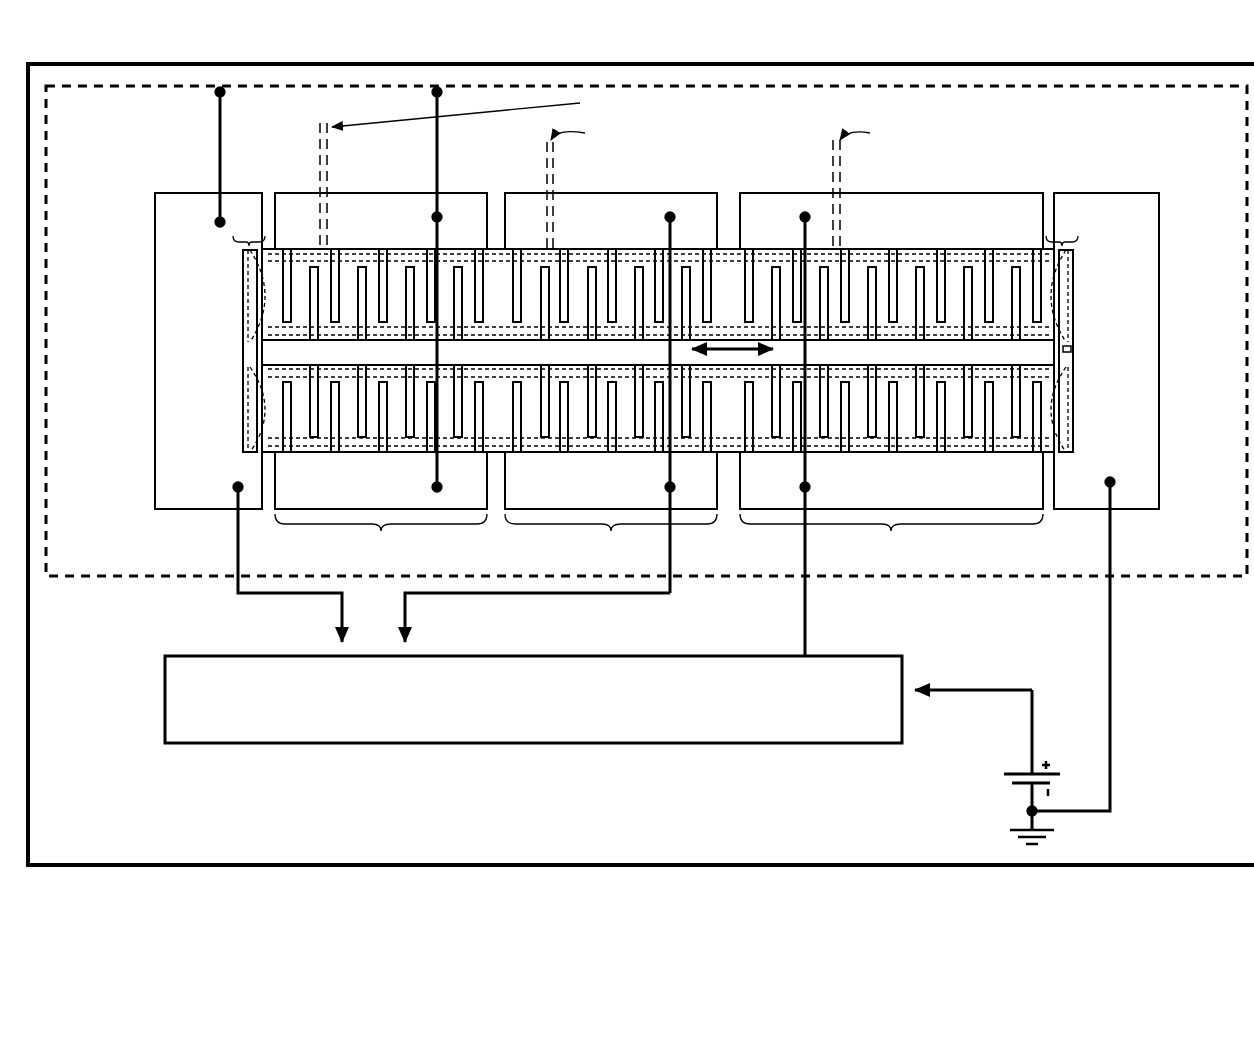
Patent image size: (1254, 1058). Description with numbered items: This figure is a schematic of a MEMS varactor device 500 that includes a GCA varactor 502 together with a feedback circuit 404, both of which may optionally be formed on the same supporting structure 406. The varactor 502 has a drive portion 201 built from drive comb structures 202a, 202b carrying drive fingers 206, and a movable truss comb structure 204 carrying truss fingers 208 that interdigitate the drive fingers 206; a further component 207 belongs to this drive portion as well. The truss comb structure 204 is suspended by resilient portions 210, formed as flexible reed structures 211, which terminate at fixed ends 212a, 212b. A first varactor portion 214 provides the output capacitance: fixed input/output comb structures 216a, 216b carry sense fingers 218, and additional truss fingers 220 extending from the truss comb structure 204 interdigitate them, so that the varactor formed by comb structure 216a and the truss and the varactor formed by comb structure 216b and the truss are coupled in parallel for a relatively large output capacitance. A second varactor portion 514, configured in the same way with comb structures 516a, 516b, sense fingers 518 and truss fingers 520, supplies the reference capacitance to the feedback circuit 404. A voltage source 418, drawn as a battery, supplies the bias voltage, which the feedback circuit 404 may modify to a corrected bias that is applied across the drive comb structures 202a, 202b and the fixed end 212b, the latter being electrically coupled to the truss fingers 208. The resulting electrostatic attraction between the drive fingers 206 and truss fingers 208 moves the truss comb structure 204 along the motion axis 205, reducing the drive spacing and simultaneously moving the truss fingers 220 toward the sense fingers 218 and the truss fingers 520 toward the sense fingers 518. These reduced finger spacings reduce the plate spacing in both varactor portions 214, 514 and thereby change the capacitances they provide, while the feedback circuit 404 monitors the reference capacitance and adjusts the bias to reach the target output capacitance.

The MEMS varactor device 500 is at (641, 513).
The GCA varactor 502 is at (108, 560).
The supporting structure 406 is at (92, 844).
The feedback circuit 404 is at (233, 702).
The voltage source 418 is at (1057, 663).
The fixed end 212a is at (208, 298).
The fixed end 212b is at (1106, 351).
The reed structure 211 is at (241, 266).
The resilient portion 210 is at (255, 232).
The component 207 is at (1080, 349).
The drive finger 206 is at (959, 243).
The truss finger 208 is at (994, 322).
The truss comb structure 204 is at (658, 350).
The motion axis 205 is at (725, 337).
The additional truss finger 220 is at (293, 321).
The sense finger 218 is at (306, 246).
The input/output comb structure 216a is at (381, 287).
The input/output comb structure 216b is at (381, 480).
The comb structure 516a is at (611, 393).
The comb structure 516b is at (611, 480).
The sense finger 518 is at (535, 245).
The truss finger 520 is at (620, 317).
The drive comb structure 202a is at (891, 424).
The drive comb structure 202b is at (891, 445).
The first varactor portion 214 is at (381, 538).
The second varactor portion 514 is at (611, 538).
The drive portion 201 is at (891, 538).